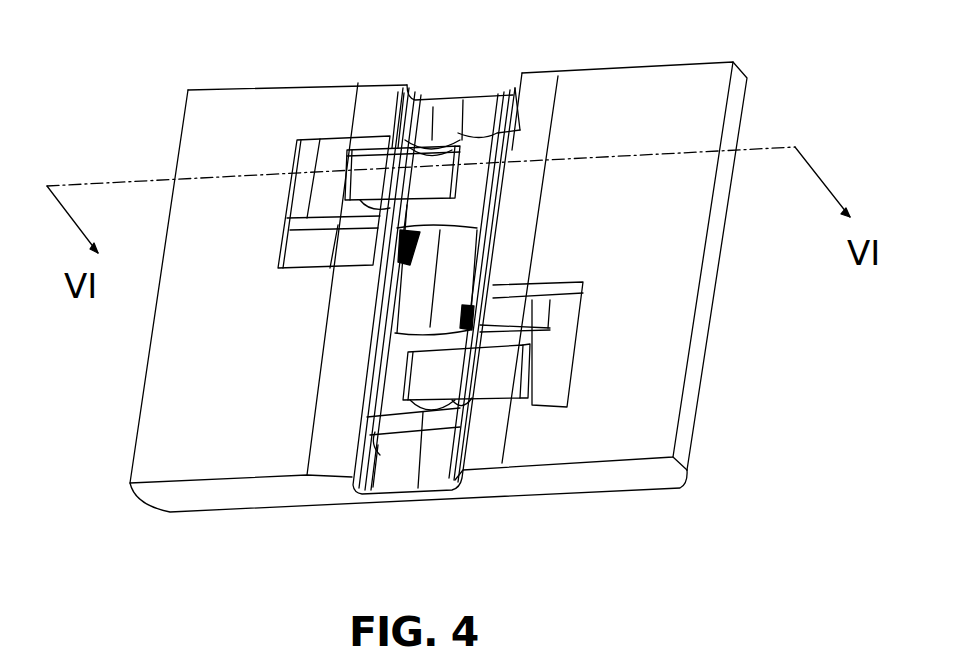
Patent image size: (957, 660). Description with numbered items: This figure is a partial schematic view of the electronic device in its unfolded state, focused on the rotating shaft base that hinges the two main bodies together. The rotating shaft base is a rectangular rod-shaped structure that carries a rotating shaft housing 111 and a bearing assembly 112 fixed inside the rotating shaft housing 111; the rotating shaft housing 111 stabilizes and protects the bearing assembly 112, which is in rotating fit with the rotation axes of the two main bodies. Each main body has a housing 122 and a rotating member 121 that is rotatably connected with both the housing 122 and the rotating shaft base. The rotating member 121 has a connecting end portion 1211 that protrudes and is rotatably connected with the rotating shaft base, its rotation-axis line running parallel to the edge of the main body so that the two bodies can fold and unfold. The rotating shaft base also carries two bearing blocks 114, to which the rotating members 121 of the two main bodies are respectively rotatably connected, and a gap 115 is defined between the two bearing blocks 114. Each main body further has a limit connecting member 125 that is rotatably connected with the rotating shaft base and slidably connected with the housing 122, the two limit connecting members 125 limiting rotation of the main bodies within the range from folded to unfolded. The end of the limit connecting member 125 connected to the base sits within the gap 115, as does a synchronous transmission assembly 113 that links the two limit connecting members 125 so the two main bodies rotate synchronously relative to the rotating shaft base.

The rotating shaft housing 111 is at (425, 430).
The bearing assembly 112 is at (460, 137).
The synchronous transmission assembly 113 is at (490, 250).
The bearing block 114 is at (425, 467).
The gap 115 is at (395, 298).
The rotating member 121 is at (393, 167).
The connecting end portion 1211 is at (428, 163).
The housing 122 is at (256, 495).
The limit connecting member 125 is at (370, 250).